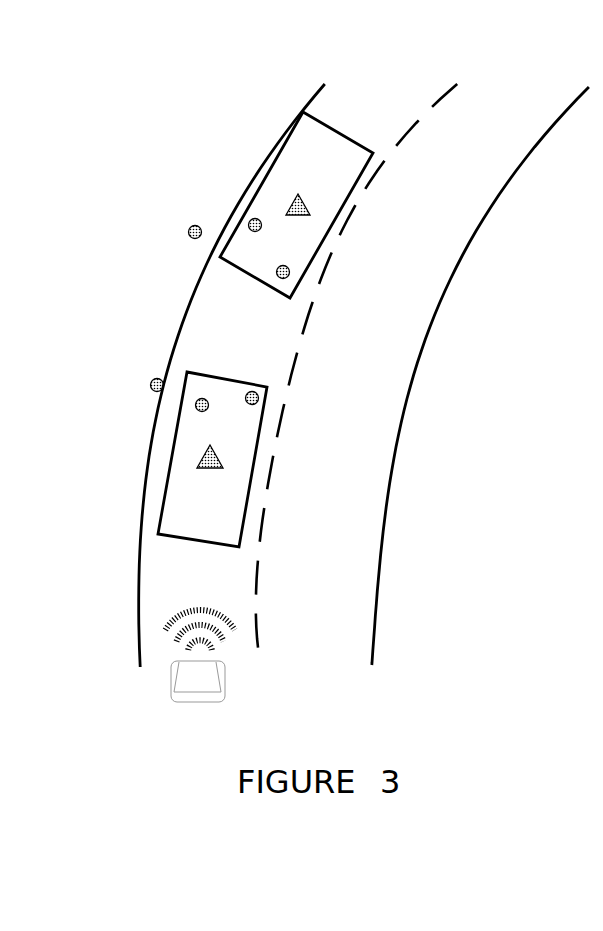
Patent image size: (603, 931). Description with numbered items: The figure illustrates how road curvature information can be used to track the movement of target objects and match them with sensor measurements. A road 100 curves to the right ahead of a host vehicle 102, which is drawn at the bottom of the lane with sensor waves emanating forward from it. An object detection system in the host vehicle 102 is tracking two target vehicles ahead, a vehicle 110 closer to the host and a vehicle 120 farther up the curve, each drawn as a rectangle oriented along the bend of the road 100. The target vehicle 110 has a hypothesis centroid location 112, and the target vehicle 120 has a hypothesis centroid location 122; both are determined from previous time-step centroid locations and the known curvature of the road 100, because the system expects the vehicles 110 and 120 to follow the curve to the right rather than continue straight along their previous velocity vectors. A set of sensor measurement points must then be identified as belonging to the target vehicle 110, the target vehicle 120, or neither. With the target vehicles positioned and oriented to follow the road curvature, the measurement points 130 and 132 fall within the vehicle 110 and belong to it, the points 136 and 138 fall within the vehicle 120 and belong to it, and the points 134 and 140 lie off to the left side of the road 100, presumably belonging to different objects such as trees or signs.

The road 100 is at (402, 428).
The host vehicle 102 is at (226, 680).
The target vehicle 110 is at (160, 518).
The hypothesis centroid location 112 is at (211, 470).
The target vehicle 120 is at (256, 195).
The hypothesis centroid location 122 is at (307, 205).
The sensor measurement point 130 is at (259, 398).
The sensor measurement point 132 is at (202, 398).
The sensor measurement point 134 is at (157, 378).
The sensor measurement point 136 is at (288, 278).
The sensor measurement point 138 is at (249, 225).
The sensor measurement point 140 is at (188, 231).